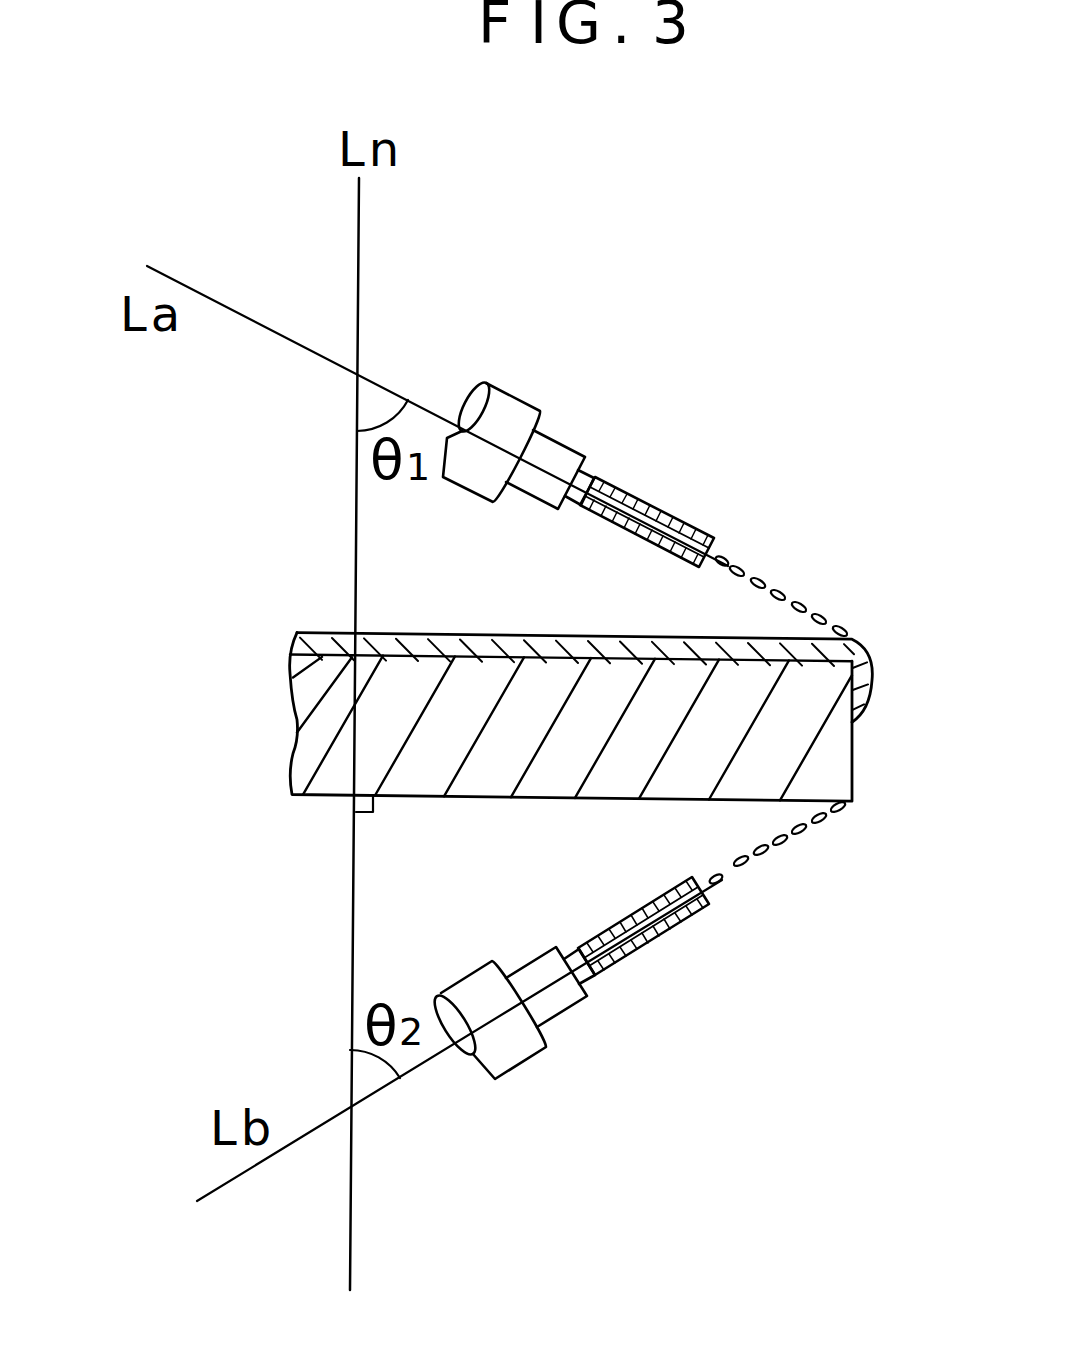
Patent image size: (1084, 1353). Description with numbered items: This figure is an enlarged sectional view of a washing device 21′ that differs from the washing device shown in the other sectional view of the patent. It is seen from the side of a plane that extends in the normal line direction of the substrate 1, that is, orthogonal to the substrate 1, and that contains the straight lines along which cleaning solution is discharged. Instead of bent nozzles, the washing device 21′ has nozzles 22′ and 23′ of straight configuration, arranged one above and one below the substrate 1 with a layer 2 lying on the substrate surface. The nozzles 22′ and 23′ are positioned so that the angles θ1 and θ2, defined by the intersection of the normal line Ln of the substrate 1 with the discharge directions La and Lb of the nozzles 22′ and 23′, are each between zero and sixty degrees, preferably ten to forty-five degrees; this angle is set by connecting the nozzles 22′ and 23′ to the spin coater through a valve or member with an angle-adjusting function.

The substrate 1 is at (432, 773).
The thin film layer 2 is at (453, 632).
The washing device 21′ is at (525, 385).
The nozzle 22′ is at (650, 502).
The nozzle 23′ is at (647, 943).